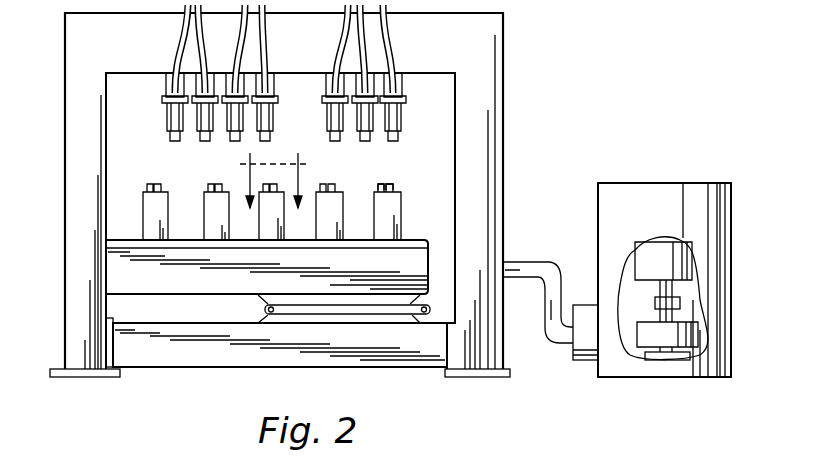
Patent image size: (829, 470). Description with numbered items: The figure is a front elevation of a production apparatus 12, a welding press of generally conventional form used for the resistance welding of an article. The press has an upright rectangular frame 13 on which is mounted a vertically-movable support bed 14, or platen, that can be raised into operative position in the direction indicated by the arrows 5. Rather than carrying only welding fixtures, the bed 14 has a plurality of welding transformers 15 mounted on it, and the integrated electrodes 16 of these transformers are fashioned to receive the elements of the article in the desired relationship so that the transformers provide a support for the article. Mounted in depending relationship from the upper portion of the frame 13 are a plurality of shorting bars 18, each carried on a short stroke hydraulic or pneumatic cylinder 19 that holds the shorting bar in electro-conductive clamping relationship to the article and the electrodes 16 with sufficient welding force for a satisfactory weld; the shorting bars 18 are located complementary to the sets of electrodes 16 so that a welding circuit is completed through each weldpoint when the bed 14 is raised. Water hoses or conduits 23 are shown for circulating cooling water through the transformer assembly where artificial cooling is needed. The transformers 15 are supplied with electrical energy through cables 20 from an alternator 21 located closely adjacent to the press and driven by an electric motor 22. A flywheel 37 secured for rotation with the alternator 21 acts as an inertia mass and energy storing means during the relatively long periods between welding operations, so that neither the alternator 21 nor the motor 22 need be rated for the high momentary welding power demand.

The direction arrows 5 is at (274, 195).
The production apparatus 12 is at (503, 42).
The upright rectangular frame 13 is at (493, 95).
The support bed 14 is at (415, 252).
The welding transformers 15 is at (162, 210).
The integrated electrodes 16 is at (385, 192).
The shorting bars 18 is at (172, 138).
The short stroke hydraulic or pneumatic cylinders 19 is at (168, 118).
The cables 20 is at (517, 267).
The alternator 21 is at (670, 358).
The electric motor 22 is at (645, 257).
The water hoses or conduits 23 is at (395, 191).
The flywheel 37 is at (650, 342).